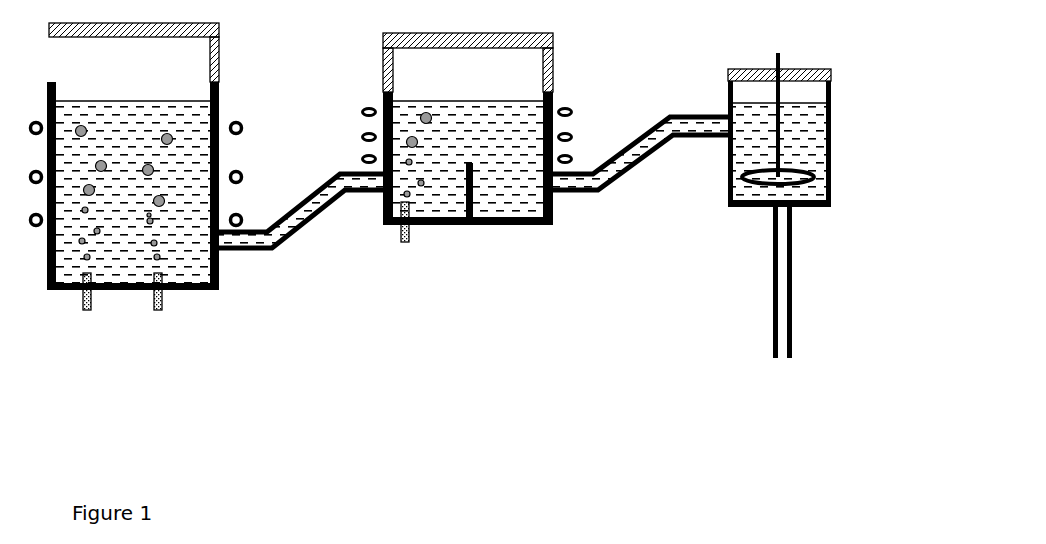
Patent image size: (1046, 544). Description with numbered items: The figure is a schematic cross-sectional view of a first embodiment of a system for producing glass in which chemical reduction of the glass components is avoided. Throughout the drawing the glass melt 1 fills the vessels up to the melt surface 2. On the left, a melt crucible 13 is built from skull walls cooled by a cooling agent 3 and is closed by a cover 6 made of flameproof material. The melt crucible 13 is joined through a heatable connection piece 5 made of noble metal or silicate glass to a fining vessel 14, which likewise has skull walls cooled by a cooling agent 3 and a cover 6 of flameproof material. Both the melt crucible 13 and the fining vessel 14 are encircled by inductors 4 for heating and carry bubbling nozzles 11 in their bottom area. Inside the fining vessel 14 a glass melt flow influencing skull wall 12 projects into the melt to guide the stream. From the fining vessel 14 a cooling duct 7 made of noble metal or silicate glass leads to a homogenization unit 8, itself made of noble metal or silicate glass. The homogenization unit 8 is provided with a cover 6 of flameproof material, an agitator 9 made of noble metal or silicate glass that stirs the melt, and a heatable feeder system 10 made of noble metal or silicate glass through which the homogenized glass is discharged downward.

The glass melt 1 is at (170, 255).
The melt surface 2 is at (115, 101).
The skull walls cooled by cooling agent 3 is at (383, 127).
The inductor 4 is at (361, 159).
The heatable connection piece 5 is at (297, 222).
The cover made of flameproof material 6 is at (219, 63).
The cooling duct 7 is at (618, 168).
The homogenization unit 8 is at (728, 97).
The agitator 9 is at (775, 178).
The heatable feeder system 10 is at (773, 282).
The bubbling nozzles 11 is at (96, 292).
The glass melt flow influencing skull wall 12 is at (473, 205).
The melt crucible 13 is at (223, 393).
The fining vessel 14 is at (388, 393).